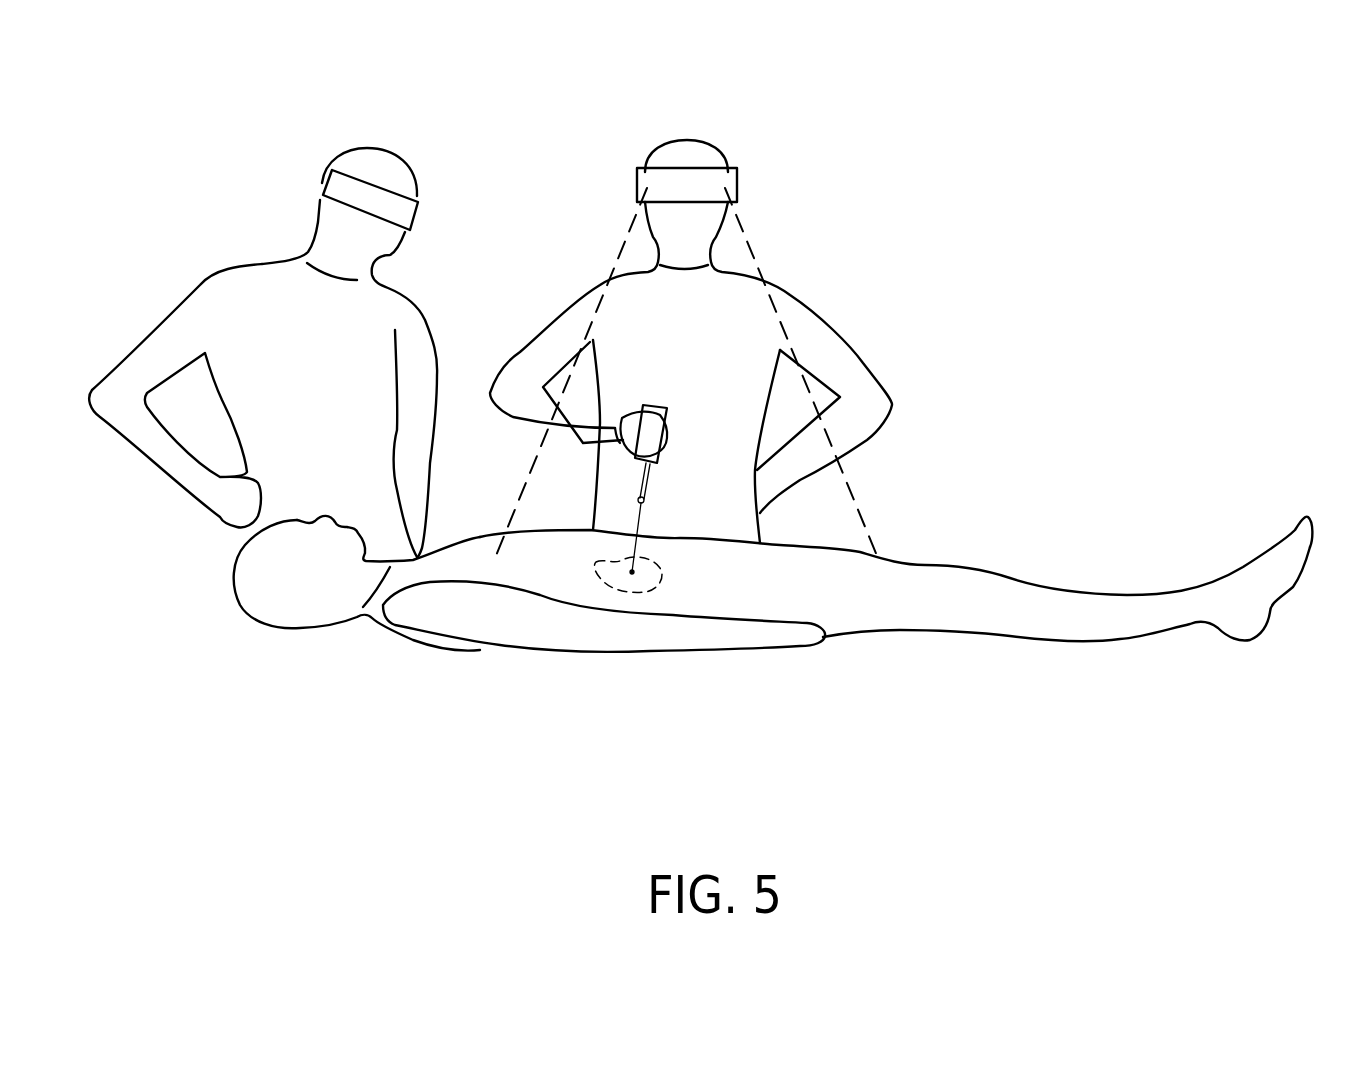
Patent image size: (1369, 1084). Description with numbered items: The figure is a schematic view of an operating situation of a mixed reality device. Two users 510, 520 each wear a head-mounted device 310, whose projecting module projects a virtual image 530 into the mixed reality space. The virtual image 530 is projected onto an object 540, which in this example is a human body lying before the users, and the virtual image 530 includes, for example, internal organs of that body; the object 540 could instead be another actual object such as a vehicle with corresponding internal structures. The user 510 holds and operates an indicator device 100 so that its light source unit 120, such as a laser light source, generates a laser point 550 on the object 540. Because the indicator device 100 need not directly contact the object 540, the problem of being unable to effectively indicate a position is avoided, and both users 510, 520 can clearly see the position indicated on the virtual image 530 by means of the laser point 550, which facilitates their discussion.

The indicator device 100 is at (657, 403).
The light source unit 120 is at (645, 500).
The head-mounted device 310 is at (378, 205).
The user 510 is at (747, 132).
The user 520 is at (323, 152).
The virtual image 530 is at (610, 593).
The object 540 is at (1053, 597).
The laser point 550 is at (641, 576).